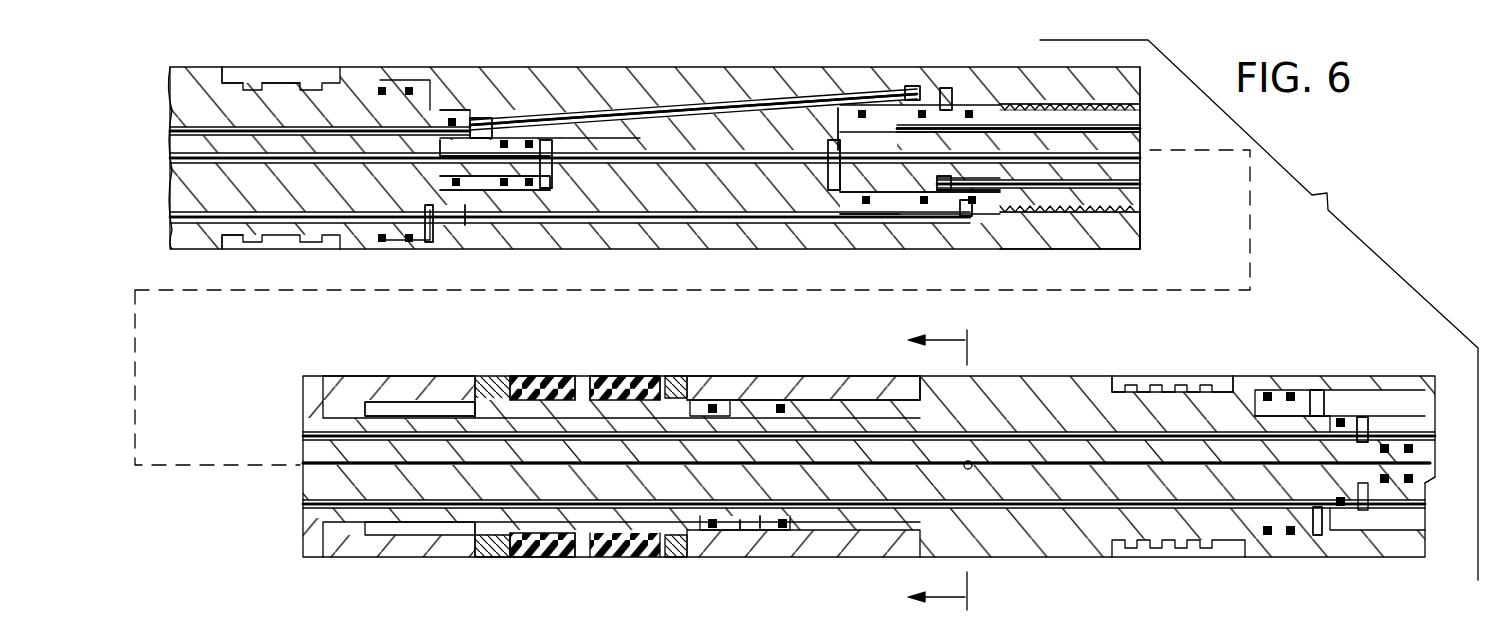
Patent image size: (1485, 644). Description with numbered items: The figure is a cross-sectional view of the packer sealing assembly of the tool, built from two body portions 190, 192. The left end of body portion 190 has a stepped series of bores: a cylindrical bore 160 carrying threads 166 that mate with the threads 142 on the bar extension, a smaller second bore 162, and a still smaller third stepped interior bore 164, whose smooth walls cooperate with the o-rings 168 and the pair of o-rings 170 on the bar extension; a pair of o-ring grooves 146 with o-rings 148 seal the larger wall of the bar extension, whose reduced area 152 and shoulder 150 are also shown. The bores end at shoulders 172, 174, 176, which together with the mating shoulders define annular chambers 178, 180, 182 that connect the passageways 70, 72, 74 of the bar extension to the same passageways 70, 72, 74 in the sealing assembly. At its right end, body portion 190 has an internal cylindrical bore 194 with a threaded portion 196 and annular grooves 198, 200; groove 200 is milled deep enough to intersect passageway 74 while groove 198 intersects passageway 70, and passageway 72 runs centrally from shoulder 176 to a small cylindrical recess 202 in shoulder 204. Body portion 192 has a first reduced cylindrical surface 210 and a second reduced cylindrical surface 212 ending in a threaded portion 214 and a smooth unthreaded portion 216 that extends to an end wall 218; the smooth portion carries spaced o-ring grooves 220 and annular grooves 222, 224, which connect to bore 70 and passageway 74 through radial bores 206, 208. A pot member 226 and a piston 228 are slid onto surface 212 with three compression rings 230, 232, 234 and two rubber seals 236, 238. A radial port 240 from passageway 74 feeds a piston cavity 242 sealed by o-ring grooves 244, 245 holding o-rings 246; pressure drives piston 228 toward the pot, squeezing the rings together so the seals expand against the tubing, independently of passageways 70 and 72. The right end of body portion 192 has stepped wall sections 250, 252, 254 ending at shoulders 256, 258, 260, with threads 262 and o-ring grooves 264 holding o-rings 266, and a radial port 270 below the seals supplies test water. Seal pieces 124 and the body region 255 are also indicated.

The passageway 70 is at (172, 125).
The passageway 72 is at (172, 170).
The passageway 74 is at (172, 228).
The seal 124 is at (409, 91).
The threads 142 is at (243, 250).
The o-ring grooves 146 is at (504, 144).
The o-rings 148 is at (384, 244).
The shoulder 150 is at (529, 144).
The reduced area 152 is at (922, 114).
The cylindrical bore 160 is at (245, 92).
The second bore 162 is at (458, 125).
The third stepped interior bore 164 is at (546, 135).
The threads 166 is at (296, 86).
The o-rings 168 is at (458, 130).
The o-rings 170 is at (472, 205).
The shoulder 172 is at (430, 118).
The shoulder 174 is at (482, 118).
The shoulder 176 is at (548, 186).
The annular chamber 178 is at (430, 244).
The annular chamber 180 is at (442, 215).
The annular chamber 182 is at (596, 146).
The body portion 190 is at (805, 95).
The body portion 192 is at (1150, 105).
The internal cylindrical bore 194 is at (860, 206).
The threaded portion 196 is at (1096, 225).
The annular groove 198 is at (918, 208).
The annular groove 200 is at (968, 248).
The small cylindrical recess 202 is at (836, 180).
The shoulder 204 is at (820, 205).
The radial bore 206 is at (950, 216).
The radial bore 208 is at (836, 108).
The first reduced cylindrical surface 210 is at (846, 400).
The second reduced cylindrical surface 212 is at (346, 418).
The threaded portion 214 is at (1045, 100).
The smooth unthreaded portion 216 is at (990, 108).
The end wall 218 is at (830, 148).
The o-ring grooves 220 is at (903, 88).
The annular groove 222 is at (1018, 141).
The annular groove 224 is at (920, 88).
The pot member 226 is at (402, 390).
The piston 228 is at (792, 384).
The compression ring 230 is at (682, 380).
The compression ring 232 is at (575, 558).
The compression ring 234 is at (495, 558).
The rubber seal 236 is at (625, 380).
The rubber seal 238 is at (545, 380).
The radial port 240 is at (766, 552).
The piston cavity 242 is at (746, 548).
The o-ring groove 244 is at (710, 416).
The o-ring groove 245 is at (783, 525).
The o-rings 246 is at (710, 525).
The stepped cylindrical wall section 250 is at (1118, 380).
The stepped cylindrical wall section 252 is at (1298, 540).
The stepped cylindrical wall section 254 is at (1365, 520).
The body 255 is at (1289, 414).
The shoulder 256 is at (1322, 404).
The shoulder 258 is at (1378, 425).
The shoulder 260 is at (1428, 472).
The threads 262 is at (1196, 392).
The o-ring grooves 264 is at (1270, 392).
The o-ring 266 is at (1268, 538).
The radial port 270 is at (972, 462).